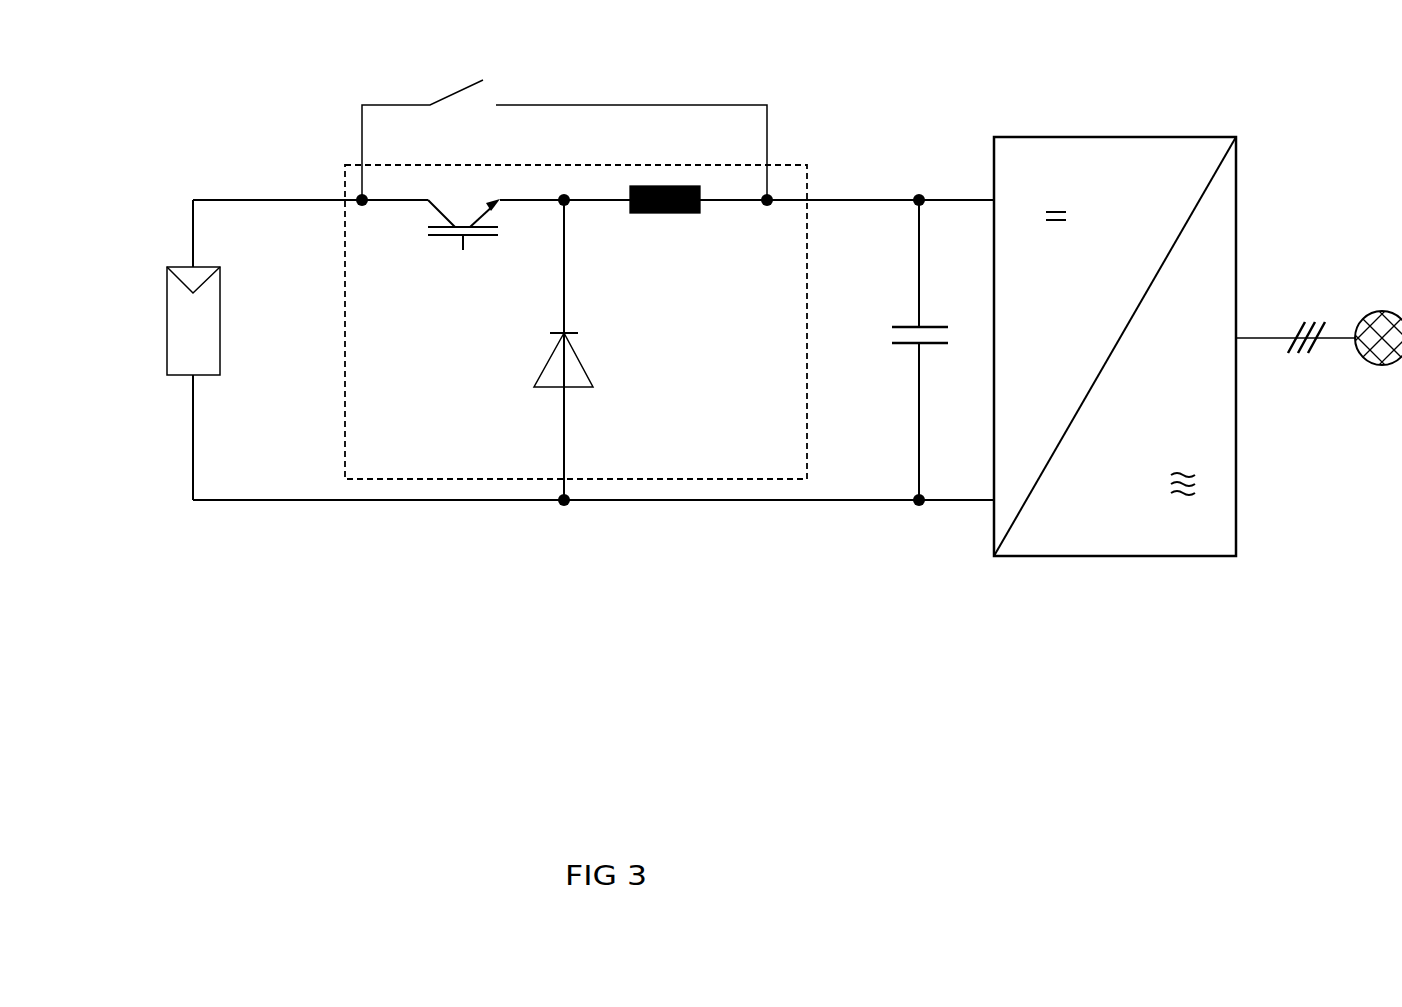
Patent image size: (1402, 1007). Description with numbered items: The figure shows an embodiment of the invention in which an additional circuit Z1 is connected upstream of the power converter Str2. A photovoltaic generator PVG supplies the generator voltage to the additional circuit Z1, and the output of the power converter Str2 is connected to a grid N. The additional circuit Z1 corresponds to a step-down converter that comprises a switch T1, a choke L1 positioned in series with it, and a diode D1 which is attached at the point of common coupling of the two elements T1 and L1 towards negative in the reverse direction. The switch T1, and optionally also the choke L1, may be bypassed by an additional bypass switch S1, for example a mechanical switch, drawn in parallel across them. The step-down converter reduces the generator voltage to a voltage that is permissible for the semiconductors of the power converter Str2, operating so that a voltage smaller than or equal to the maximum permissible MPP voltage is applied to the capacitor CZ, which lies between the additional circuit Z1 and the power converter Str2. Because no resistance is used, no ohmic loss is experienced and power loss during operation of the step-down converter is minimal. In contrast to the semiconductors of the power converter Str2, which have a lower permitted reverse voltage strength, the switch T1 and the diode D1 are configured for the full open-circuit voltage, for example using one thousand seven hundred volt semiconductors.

The photovoltaic generator PVG is at (150, 321).
The additional circuit Z1 is at (338, 457).
The bypass switch S1 is at (564, 110).
The switch T1 is at (464, 257).
The choke L1 is at (665, 241).
The diode D1 is at (603, 350).
The capacitor CZ is at (895, 350).
The power converter Str2 is at (1115, 317).
The grid / network N is at (1319, 343).